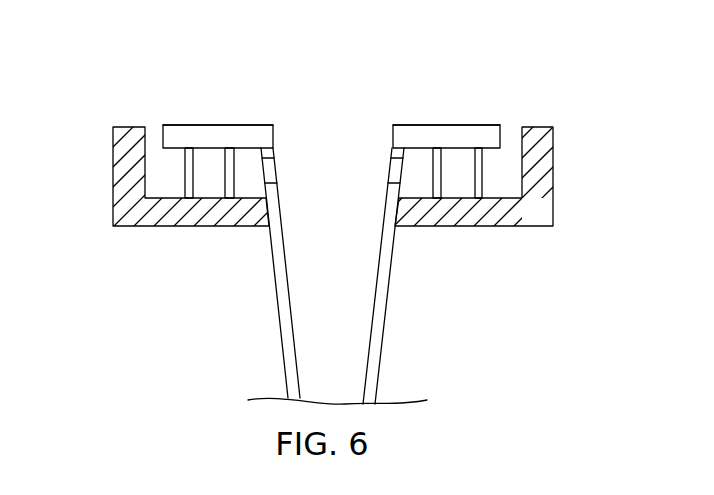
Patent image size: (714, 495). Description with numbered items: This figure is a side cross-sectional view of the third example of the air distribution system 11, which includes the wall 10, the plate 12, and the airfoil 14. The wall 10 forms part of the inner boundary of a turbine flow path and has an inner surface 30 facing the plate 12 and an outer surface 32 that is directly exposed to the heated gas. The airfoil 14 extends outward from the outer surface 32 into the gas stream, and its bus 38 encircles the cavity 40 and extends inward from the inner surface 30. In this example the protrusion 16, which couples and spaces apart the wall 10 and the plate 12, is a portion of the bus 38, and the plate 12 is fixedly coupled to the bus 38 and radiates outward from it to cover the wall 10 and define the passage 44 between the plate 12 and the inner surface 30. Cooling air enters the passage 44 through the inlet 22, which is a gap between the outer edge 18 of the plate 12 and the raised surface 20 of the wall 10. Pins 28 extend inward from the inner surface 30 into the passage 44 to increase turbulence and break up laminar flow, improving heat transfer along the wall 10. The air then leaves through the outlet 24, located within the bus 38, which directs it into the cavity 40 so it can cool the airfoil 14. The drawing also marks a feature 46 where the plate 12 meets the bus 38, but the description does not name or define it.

The wall 10 is at (152, 228).
The air distribution system 11 is at (100, 274).
The plate 12 is at (183, 125).
The airfoil 14 is at (285, 362).
The protrusion 16 is at (280, 166).
The outer edge 18 is at (165, 140).
The raised surface 20 is at (125, 128).
The inlet 22 is at (157, 125).
The outlet 24 is at (380, 167).
The pin 28 is at (230, 197).
The inner surface 30 is at (480, 198).
The outer surface 32 is at (418, 228).
The bus 38 is at (392, 197).
The cavity 40 is at (305, 327).
The passage 44 is at (154, 178).
The joint layer 46 is at (266, 156).